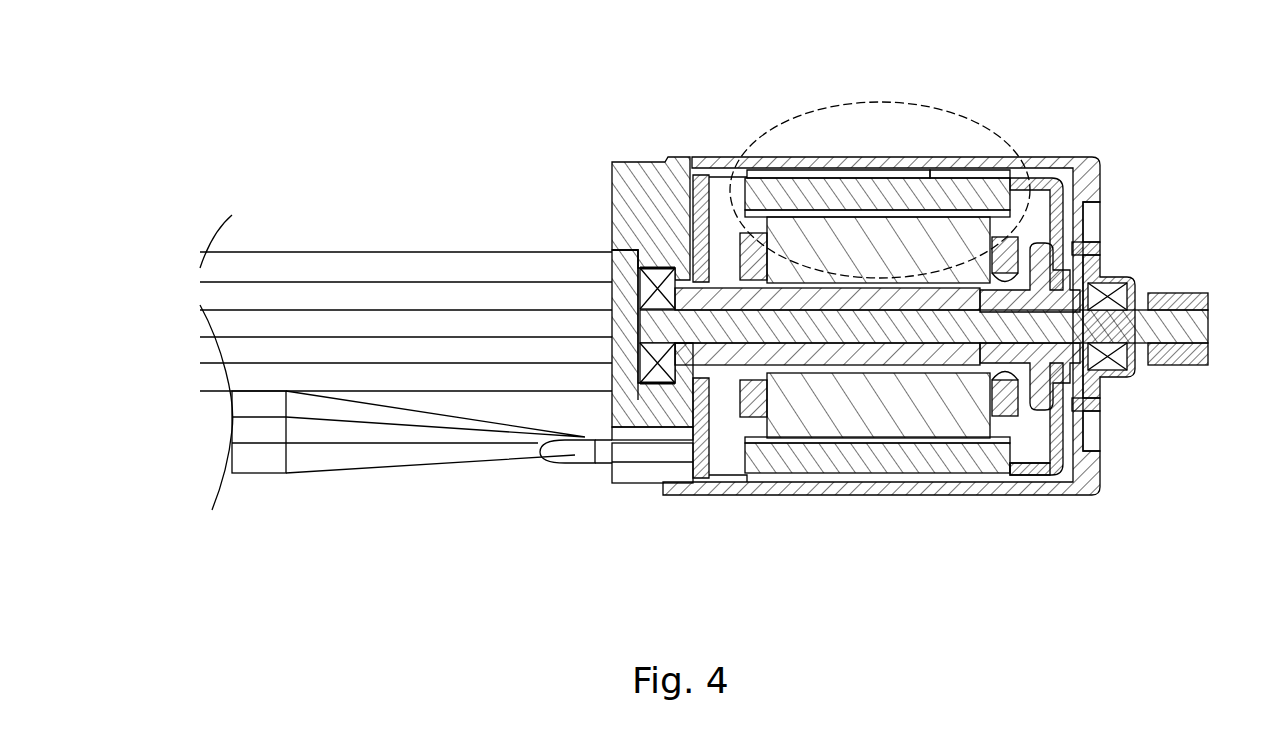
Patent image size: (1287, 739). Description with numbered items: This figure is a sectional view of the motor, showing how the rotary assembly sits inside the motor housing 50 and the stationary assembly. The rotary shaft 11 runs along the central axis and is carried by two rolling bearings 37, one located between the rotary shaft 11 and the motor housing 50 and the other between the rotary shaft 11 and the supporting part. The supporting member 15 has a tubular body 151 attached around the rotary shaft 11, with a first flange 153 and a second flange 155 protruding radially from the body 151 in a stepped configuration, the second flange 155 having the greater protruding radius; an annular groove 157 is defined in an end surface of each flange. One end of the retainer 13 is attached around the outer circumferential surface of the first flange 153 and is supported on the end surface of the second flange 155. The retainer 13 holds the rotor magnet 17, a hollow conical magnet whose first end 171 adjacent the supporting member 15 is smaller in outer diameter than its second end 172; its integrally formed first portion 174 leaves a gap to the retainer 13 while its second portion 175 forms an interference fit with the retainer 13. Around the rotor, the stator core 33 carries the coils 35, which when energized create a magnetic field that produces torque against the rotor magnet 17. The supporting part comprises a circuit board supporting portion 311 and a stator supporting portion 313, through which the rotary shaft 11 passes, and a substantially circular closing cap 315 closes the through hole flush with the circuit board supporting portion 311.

The rotary shaft 11 is at (1212, 325).
The retainer 13 is at (880, 473).
The supporting member 15 is at (1133, 372).
The rotor magnet 17 is at (835, 455).
The stator core 33 is at (800, 405).
The coils 35 is at (743, 415).
The rolling bearings 37 is at (655, 266).
The motor housing 50 is at (1095, 478).
The tubular body 151 is at (1000, 415).
The first flange 153 is at (1083, 380).
The second flange 155 is at (1050, 478).
The annular groove 157 is at (1068, 250).
The first end 171 is at (1052, 178).
The second end 172 is at (733, 175).
The first portion 174 is at (945, 180).
The second portion 175 is at (790, 180).
The circuit board supporting portion 311 is at (640, 422).
The stator supporting portion 313 is at (690, 382).
The closing cap 315 is at (612, 380).